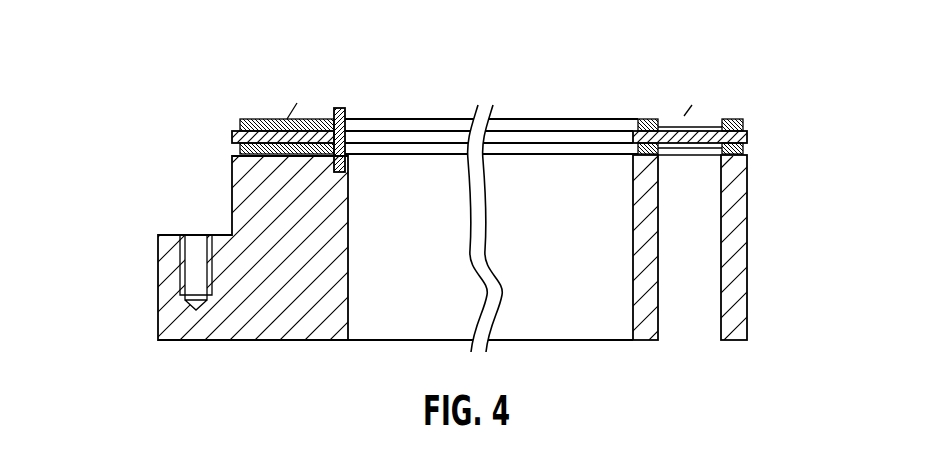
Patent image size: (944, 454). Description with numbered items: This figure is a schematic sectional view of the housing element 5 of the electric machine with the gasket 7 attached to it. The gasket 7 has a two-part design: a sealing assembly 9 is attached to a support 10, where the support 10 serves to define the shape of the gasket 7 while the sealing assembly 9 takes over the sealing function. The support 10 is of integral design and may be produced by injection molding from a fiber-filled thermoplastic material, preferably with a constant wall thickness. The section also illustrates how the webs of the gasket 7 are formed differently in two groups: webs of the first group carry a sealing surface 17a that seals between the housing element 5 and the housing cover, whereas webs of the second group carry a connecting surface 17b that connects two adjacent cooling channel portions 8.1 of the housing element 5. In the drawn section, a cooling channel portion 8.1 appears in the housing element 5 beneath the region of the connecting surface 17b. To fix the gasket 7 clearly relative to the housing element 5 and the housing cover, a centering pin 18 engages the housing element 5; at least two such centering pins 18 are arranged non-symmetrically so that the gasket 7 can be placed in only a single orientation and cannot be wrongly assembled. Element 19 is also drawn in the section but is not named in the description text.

The housing element 5 is at (640, 317).
The gasket 7 is at (445, 89).
The cooling channel portion 8.1 is at (698, 252).
The sealing assembly 9 is at (313, 118).
The support 10 is at (249, 121).
The sealing surface 17a is at (285, 118).
The connecting surface 17b is at (677, 127).
The centering pin 18 is at (349, 160).
The base body with threaded bore 19 is at (188, 323).